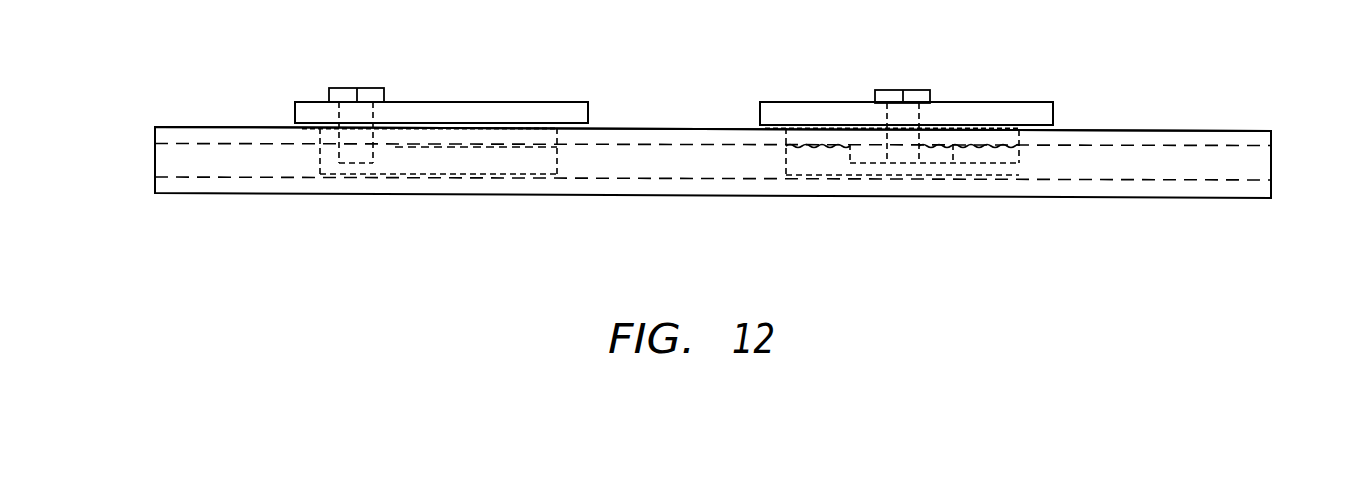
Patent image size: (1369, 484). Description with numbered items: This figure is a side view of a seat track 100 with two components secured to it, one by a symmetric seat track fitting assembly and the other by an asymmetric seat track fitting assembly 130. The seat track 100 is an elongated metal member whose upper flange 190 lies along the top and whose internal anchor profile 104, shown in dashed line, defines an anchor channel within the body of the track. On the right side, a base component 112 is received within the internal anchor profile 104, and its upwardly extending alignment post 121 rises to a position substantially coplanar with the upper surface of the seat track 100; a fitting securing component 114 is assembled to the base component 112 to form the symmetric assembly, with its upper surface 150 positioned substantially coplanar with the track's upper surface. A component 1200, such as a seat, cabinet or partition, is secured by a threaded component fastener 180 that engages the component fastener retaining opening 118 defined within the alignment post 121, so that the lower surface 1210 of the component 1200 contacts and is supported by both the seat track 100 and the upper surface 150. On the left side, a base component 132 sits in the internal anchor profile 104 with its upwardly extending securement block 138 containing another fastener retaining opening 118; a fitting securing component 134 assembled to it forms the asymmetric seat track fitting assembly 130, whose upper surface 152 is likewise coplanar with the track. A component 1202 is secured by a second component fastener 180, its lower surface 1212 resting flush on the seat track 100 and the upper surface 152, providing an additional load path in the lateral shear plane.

The seat track 100 is at (208, 126).
The internal anchor profile 104 is at (1264, 171).
The base component 112 is at (1020, 163).
The fitting securing component 114 is at (1020, 138).
The component fastener retaining opening 118 is at (356, 163).
The upwardly extending alignment post 121 is at (873, 135).
The asymmetric seat track fitting assembly 130 is at (1198, 130).
The base component 132 is at (557, 163).
The fitting securing component 134 is at (557, 145).
The upwardly extending securement block 138 is at (320, 165).
The upper surface 150 is at (988, 128).
The upper surface 152 is at (525, 125).
The component fastener 180 is at (365, 88).
The upper flange 190 is at (1264, 141).
The component 1200 is at (798, 101).
The component 1202 is at (562, 101).
The lower surface 1210 is at (760, 127).
The lower surface 1212 is at (297, 128).